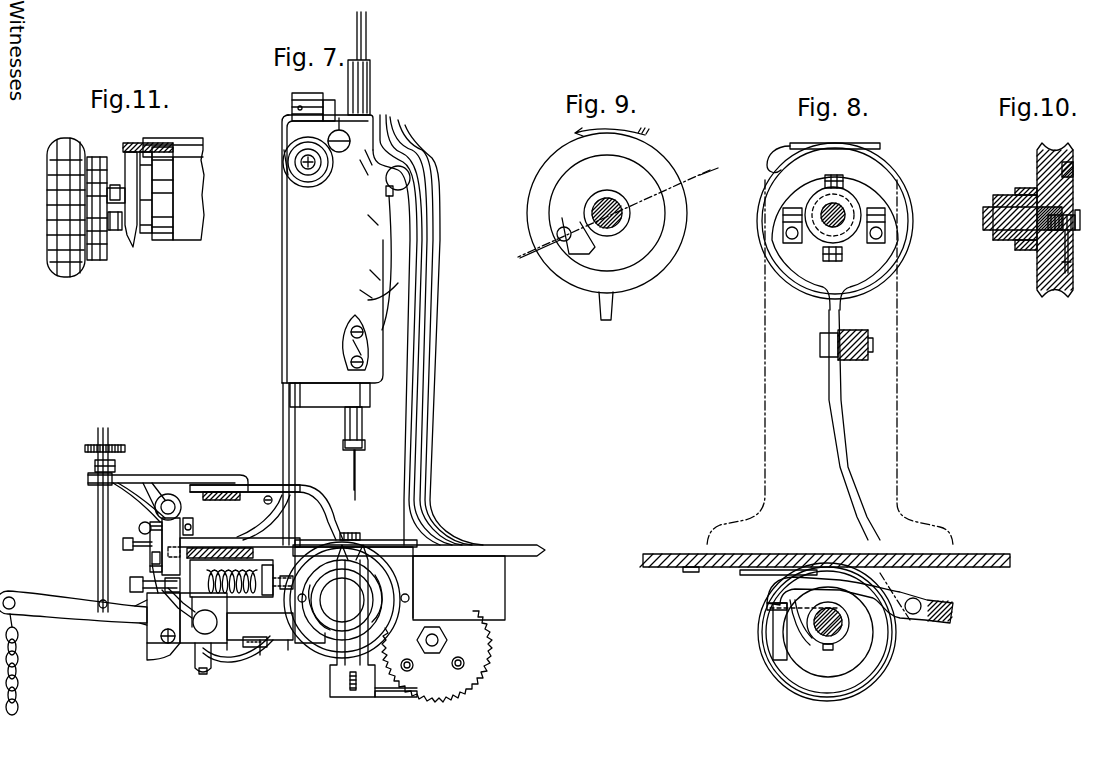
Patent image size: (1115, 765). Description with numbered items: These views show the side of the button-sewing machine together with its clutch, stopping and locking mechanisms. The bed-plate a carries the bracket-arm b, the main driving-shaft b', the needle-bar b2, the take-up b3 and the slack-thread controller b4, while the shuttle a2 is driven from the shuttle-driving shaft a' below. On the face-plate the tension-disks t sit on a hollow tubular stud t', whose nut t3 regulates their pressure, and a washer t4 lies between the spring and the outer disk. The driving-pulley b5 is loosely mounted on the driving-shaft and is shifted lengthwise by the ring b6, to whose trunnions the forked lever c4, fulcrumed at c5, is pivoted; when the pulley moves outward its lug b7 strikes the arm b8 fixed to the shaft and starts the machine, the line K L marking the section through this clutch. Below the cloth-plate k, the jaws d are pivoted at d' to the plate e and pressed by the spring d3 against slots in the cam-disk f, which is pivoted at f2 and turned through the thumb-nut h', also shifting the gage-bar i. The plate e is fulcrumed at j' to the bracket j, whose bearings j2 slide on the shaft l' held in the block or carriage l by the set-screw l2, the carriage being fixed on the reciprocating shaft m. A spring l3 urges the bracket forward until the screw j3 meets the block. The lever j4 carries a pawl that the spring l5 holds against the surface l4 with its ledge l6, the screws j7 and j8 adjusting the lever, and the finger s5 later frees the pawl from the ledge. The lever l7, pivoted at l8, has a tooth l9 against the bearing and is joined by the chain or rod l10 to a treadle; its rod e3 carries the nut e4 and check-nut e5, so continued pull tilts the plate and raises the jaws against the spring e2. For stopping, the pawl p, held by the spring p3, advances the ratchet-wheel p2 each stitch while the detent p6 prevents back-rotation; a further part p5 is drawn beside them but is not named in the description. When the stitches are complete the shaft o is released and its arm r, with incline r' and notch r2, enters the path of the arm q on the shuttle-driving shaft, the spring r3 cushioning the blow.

In FIG. 11, the bed-plate a is at (173, 189).
In FIG. 7, the bed-plate a is at (419, 576).
In FIG. 8, the bed-plate a is at (825, 552).
In FIG. 11, the shuttle-driving shaft a' is at (162, 206).
In FIG. 8, the shuttle-driving shaft a' is at (834, 629).
In FIG. 7, the shuttle a2 is at (378, 580).
In FIG. 7, the bracket-arm b is at (382, 330).
In FIG. 8, the bracket-arm b is at (830, 362).
In FIG. 9, the main driving-shaft b' is at (607, 201).
In FIG. 8, the main driving-shaft b' is at (839, 208).
In FIG. 10, the main driving-shaft b' is at (1022, 217).
In FIG. 7, the needle-bar b2 is at (352, 425).
In FIG. 7, the take-up b3 is at (388, 197).
In FIG. 7, the slack-thread controller b4 is at (364, 342).
In FIG. 9, the driving-pulley b5 is at (672, 232).
In FIG. 8, the driving-pulley b5 is at (760, 205).
In FIG. 10, the driving-pulley b5 is at (1048, 152).
In FIG. 8, the ring b6 is at (825, 181).
In FIG. 10, the ring b6 is at (1023, 190).
In FIG. 9, the lug b7 is at (564, 227).
In FIG. 10, the lug b7 is at (1069, 260).
In FIG. 9, the arm b8 is at (597, 252).
In FIG. 10, the arm b8 is at (1077, 230).
In FIG. 9, the lever c4 is at (612, 310).
In FIG. 8, the lever c4 is at (843, 450).
In FIG. 8, the fulcrum c5 is at (820, 348).
In FIG. 7, the jaws d is at (266, 509).
In FIG. 7, the pivots d' is at (245, 478).
In FIG. 7, the spring d3 is at (260, 505).
In FIG. 7, the plate e is at (136, 470).
In FIG. 7, the spring e2 is at (133, 499).
In FIG. 7, the rod e3 is at (98, 513).
In FIG. 7, the nut e4 is at (95, 466).
In FIG. 7, the check-nut e5 is at (124, 450).
In FIG. 7, the cam-disk f is at (222, 497).
In FIG. 7, the pivot f2 is at (215, 499).
In FIG. 7, the thumb-nut h' is at (165, 501).
In FIG. 7, the gage-bar i is at (322, 523).
In FIG. 7, the bracket j is at (225, 546).
In FIG. 7, the fulcrum j' is at (160, 483).
In FIG. 7, the bearings j2 is at (153, 560).
In FIG. 7, the screw j3 is at (130, 586).
In FIG. 7, the lever j4 is at (147, 569).
In FIG. 7, the screw j7 is at (123, 545).
In FIG. 7, the screw j8 is at (139, 529).
In FIG. 7, the cloth-plate k is at (388, 538).
In FIG. 7, the block or carriage l is at (220, 617).
In FIG. 7, the shaft l' is at (132, 621).
In FIG. 7, the set-screw l2 is at (327, 550).
In FIG. 7, the spring l3 is at (237, 594).
In FIG. 7, the surface l4 is at (289, 641).
In FIG. 7, the spring l5 is at (220, 666).
In FIG. 7, the ledge l6 is at (237, 658).
In FIG. 7, the lever l7 is at (68, 606).
In FIG. 7, the pivot l8 is at (166, 638).
In FIG. 7, the projection or tooth l9 is at (176, 602).
In FIG. 7, the chain or rod l10 is at (17, 665).
In FIG. 7, the shaft m is at (205, 642).
In FIG. 8, the shaft o is at (914, 616).
In FIG. 7, the pawl p is at (383, 697).
In FIG. 7, the ratchet-wheel p2 is at (487, 643).
In FIG. 7, the spring p3 is at (397, 696).
In FIG. 7, the pawl screws p5 is at (413, 668).
In FIG. 7, the detent p6 is at (325, 660).
In FIG. 11, the arm q is at (110, 185).
In FIG. 8, the arm q is at (802, 618).
In FIG. 11, the arm r is at (137, 192).
In FIG. 8, the arm r is at (860, 599).
In FIG. 11, the incline r' is at (129, 209).
In FIG. 11, the notch r2 is at (108, 187).
In FIG. 8, the notch r2 is at (770, 613).
In FIG. 11, the spring r3 is at (139, 146).
In FIG. 8, the spring r3 is at (757, 575).
In FIG. 7, the finger s5 is at (246, 644).
In FIG. 7, the tension-disks t is at (308, 166).
In FIG. 7, the hollow tubular stud t' is at (307, 184).
In FIG. 7, the nut t3 is at (321, 162).
In FIG. 7, the washer t4 is at (287, 157).
In FIG. 9, the section line K is at (527, 256).
In FIG. 9, the section line L is at (619, 208).
In FIG. 8, the section line L is at (710, 169).